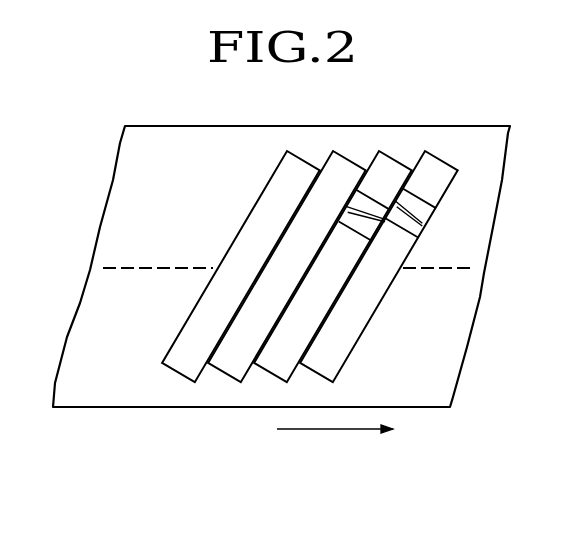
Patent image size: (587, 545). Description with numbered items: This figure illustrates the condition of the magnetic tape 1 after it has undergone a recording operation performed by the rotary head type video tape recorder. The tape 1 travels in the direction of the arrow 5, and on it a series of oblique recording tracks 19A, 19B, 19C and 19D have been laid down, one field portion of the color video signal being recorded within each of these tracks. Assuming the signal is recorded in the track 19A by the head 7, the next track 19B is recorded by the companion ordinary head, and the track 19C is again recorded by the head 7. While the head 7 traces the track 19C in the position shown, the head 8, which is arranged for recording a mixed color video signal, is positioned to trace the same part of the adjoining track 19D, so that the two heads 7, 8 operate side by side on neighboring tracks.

The magnetic tape 1 is at (372, 133).
The arrow 5 is at (315, 430).
The head 7 is at (348, 217).
The head 8 is at (427, 215).
The recording track 19A is at (178, 365).
The recording track 19B is at (227, 370).
The recording track 19C is at (277, 372).
The recording track 19D is at (323, 372).